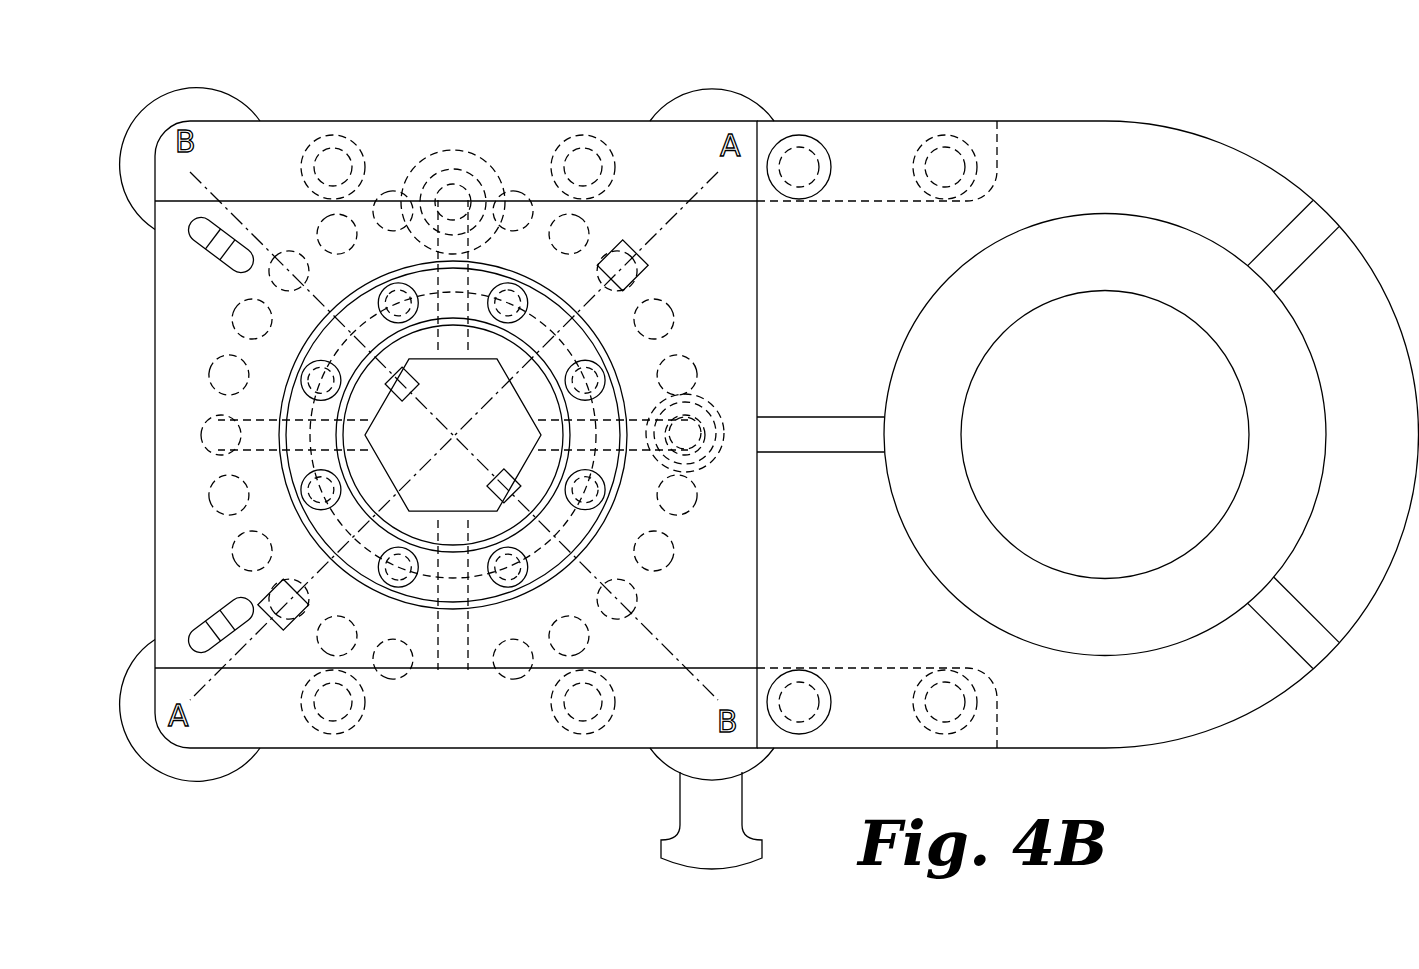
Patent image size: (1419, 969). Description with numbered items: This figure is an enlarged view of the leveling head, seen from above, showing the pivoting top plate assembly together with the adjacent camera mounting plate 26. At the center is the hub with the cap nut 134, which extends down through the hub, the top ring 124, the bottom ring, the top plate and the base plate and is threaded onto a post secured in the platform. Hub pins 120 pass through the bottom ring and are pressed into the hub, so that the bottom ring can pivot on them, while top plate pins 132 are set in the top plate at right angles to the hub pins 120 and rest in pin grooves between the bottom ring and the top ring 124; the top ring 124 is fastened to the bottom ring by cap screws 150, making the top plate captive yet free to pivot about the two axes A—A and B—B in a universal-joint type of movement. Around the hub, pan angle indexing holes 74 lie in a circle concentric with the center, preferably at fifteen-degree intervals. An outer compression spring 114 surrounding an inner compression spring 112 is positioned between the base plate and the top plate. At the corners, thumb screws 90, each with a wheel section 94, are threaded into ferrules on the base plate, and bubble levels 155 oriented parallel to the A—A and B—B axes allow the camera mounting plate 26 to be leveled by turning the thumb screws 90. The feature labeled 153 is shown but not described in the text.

The camera mounting plate 26 is at (1257, 685).
The pan angle indexing holes 74 is at (402, 434).
The thumb screw 90 is at (680, 88).
The wheel section 94 is at (228, 104).
The inner compression spring 112 is at (700, 397).
The outer compression spring 114 is at (731, 512).
The hub pins 120 is at (447, 451).
The top ring 124 is at (398, 435).
The top plate pins 132 is at (456, 435).
The cap nut 134 is at (456, 293).
The cap screws 150 is at (351, 435).
The slot 153 is at (185, 245).
The bubble levels 155 is at (195, 640).